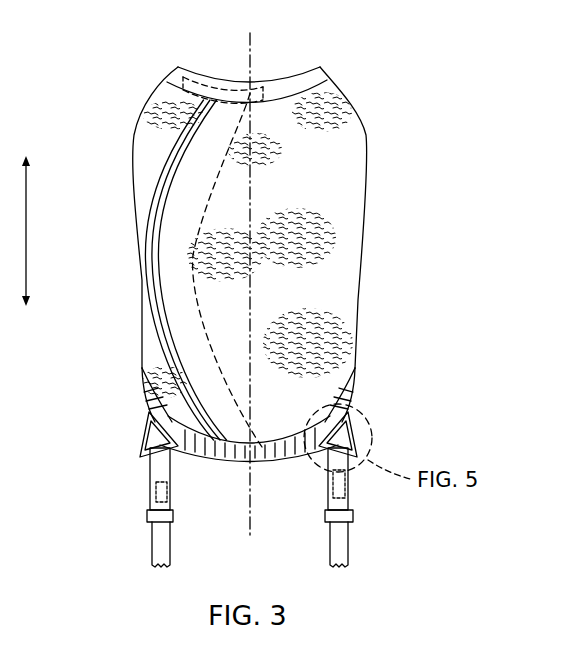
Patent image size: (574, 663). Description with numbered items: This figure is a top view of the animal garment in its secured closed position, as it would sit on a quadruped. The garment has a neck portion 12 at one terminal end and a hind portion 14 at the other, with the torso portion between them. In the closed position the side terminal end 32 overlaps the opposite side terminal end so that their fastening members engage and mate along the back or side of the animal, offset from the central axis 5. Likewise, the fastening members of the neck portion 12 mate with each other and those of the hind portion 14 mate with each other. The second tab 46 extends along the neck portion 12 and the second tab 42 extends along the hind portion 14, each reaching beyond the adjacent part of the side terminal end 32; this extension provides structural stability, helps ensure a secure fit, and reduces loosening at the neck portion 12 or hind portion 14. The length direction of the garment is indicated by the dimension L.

The central axis 5 is at (252, 42).
The neck portion 12 is at (326, 74).
The hind portion 14 is at (276, 474).
The side terminal end 32 is at (158, 194).
The second tab 42 is at (220, 463).
The second tab 46 is at (195, 80).
The length dimension L is at (26, 263).